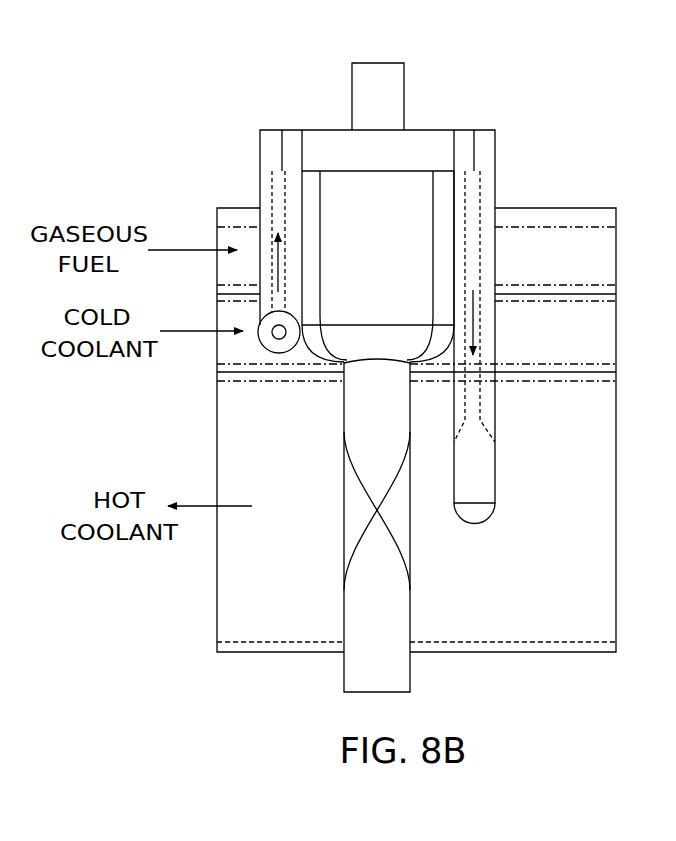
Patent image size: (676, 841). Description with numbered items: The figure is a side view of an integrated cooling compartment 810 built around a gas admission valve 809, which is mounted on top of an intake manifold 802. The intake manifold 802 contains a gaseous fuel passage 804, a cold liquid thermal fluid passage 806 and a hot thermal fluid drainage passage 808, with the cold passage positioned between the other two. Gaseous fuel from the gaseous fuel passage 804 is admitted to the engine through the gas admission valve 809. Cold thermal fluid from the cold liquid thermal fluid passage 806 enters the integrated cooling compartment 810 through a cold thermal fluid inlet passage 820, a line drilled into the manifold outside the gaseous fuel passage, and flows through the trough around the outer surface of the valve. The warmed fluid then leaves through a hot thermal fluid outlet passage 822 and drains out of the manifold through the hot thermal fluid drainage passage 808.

The intake manifold 802 is at (561, 215).
The gaseous fuel passage 804 is at (231, 232).
The cold liquid thermal fluid passage 806 is at (230, 313).
The hot thermal fluid drainage passage 808 is at (230, 407).
The gas admission valve 809 is at (347, 145).
The integrated cooling compartment 810 is at (472, 117).
The cold thermal fluid inlet passage 820 is at (268, 185).
The hot thermal fluid outlet passage 822 is at (487, 187).